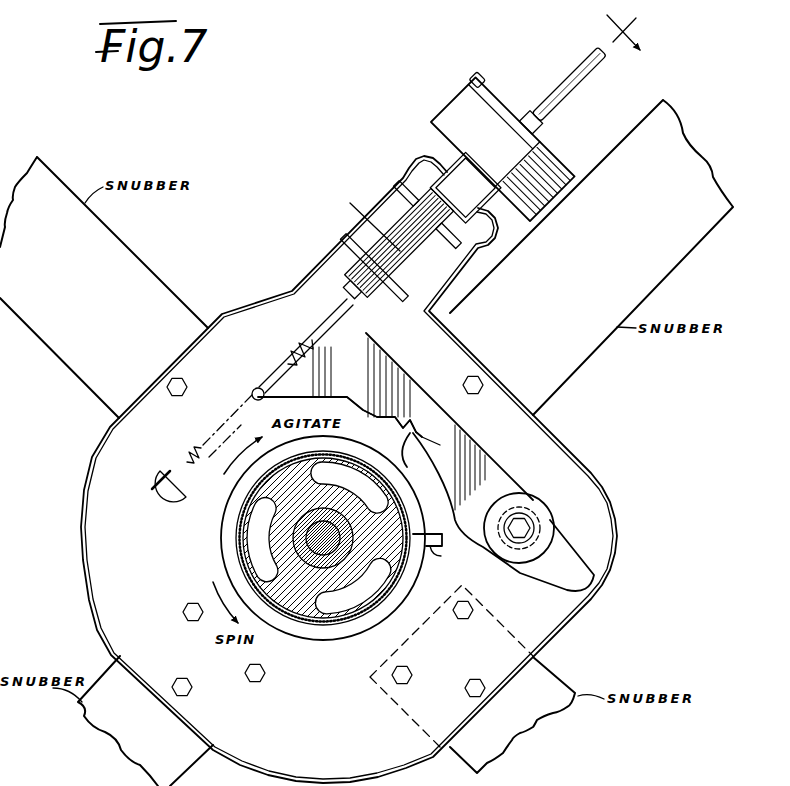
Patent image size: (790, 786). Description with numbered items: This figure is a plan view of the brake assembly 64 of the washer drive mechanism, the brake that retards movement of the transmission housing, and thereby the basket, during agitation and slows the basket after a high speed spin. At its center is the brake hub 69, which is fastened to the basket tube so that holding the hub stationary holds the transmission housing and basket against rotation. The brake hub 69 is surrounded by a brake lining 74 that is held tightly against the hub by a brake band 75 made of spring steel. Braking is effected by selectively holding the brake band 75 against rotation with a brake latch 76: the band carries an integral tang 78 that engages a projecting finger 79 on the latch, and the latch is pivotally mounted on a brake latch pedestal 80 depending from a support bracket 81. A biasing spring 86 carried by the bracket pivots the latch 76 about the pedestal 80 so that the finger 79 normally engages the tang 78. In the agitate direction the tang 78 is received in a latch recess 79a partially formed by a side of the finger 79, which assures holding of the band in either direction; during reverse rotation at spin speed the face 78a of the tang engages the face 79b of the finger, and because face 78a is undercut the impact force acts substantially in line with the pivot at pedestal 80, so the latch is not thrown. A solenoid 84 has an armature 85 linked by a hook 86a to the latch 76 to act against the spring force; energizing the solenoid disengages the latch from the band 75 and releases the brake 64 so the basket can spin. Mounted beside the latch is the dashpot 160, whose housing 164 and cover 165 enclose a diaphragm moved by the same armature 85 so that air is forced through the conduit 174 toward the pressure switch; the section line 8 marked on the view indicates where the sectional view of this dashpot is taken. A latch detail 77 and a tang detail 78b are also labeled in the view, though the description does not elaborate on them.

The section line 8- 8 is at (498, 133).
The brake assembly 64 is at (220, 541).
The brake hub 69 is at (315, 617).
The brake lining 74 is at (334, 625).
The brake band 75 is at (366, 628).
The brake latch 76 is at (497, 477).
The pawl nose 77 is at (412, 432).
The tang 78 is at (445, 540).
The face of tang 78a is at (428, 533).
The lug hook 78b is at (435, 552).
The projecting finger 79 is at (402, 448).
The latch recess 79a is at (410, 428).
The face of finger 79b is at (422, 437).
The brake latch pedestal 80 is at (537, 507).
The support bracket 81 is at (603, 490).
The solenoid 84 is at (392, 202).
The armature 85 is at (393, 283).
The biasing spring 86 is at (290, 355).
The hook 86a is at (344, 306).
The dashpot 160 is at (496, 74).
The housing 164 is at (432, 111).
The cover 165 is at (463, 77).
The conduit 174 is at (573, 70).